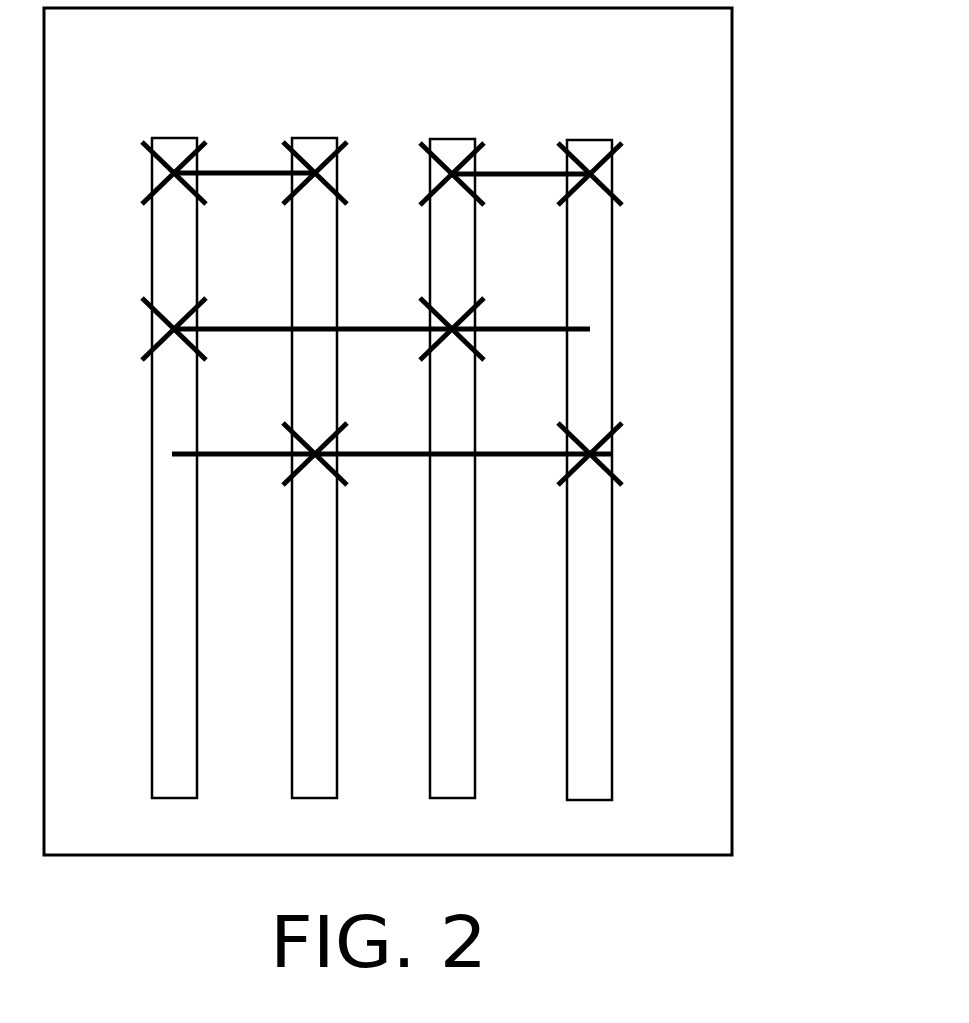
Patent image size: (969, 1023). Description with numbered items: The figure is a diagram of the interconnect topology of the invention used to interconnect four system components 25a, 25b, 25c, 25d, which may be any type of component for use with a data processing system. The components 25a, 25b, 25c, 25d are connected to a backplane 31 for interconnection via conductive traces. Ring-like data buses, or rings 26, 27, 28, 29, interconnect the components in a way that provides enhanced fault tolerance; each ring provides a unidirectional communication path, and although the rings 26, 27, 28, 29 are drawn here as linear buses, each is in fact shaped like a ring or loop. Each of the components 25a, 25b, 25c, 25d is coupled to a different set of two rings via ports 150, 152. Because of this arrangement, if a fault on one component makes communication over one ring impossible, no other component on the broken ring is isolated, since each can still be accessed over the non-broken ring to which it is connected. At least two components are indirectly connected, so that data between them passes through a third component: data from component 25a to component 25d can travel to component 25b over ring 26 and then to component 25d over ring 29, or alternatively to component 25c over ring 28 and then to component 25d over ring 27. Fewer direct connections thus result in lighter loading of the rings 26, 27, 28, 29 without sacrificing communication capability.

The backplane 31 is at (735, 100).
The system component 25a is at (177, 135).
The system component 25b is at (300, 137).
The system component 25c is at (452, 137).
The system component 25d is at (590, 137).
The ring 26 is at (227, 168).
The ring 27 is at (507, 170).
The ring 28 is at (525, 327).
The ring 29 is at (513, 452).
The port 150 is at (158, 178).
The port 152 is at (160, 327).